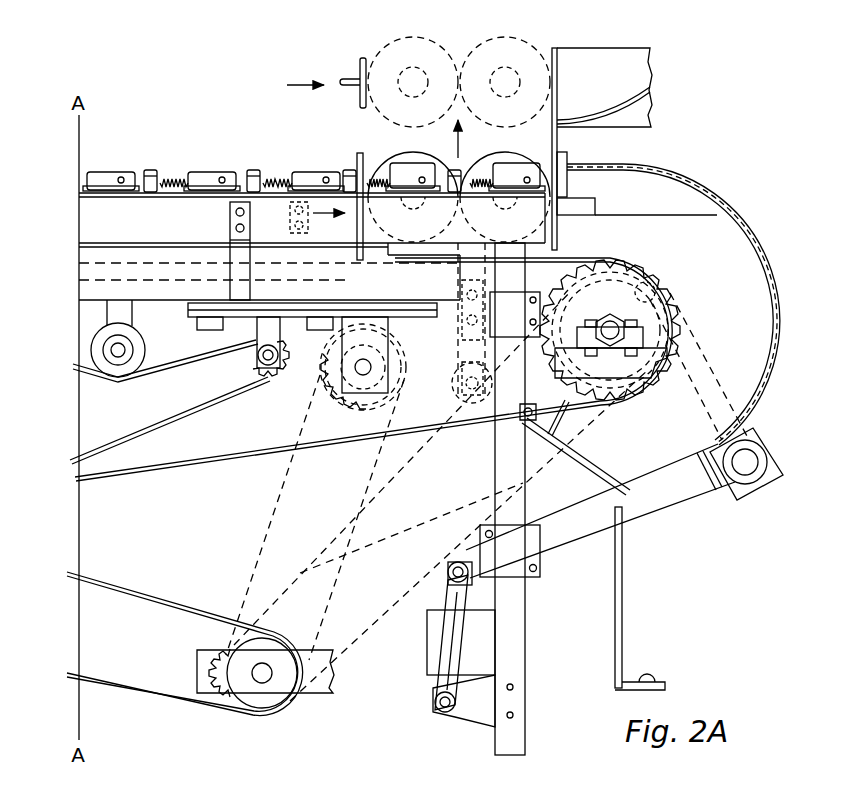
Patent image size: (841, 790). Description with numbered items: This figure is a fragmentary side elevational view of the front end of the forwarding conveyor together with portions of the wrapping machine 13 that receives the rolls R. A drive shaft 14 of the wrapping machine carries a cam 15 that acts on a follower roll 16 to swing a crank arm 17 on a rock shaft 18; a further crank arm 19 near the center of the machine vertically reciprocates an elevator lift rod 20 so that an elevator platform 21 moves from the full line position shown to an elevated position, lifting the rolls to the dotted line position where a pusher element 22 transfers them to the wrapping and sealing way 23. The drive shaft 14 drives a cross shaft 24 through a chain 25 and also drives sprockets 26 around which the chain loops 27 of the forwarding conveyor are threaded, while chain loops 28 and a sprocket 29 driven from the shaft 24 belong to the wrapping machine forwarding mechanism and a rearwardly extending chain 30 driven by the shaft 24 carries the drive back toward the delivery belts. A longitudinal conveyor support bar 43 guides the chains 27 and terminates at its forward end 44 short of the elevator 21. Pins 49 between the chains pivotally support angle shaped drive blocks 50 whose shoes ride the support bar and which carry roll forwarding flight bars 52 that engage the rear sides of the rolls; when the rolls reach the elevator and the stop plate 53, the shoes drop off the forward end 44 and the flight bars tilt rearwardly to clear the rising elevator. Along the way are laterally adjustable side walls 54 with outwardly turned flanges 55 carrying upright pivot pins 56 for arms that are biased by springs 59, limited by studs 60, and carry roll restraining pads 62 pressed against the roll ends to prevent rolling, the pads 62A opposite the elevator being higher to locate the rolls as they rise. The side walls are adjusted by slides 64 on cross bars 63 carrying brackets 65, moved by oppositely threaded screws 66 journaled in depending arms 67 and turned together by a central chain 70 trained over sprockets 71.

The wrapping machine 13 is at (656, 133).
The drive shaft 14 is at (642, 320).
The cam 15 is at (651, 268).
The follower roll 16 is at (660, 290).
The crank arm 17 is at (719, 385).
The rock shaft 18 is at (758, 461).
The further crank arm 19 is at (669, 505).
The elevator lift rod 20 is at (498, 468).
The elevator platform 21 is at (458, 248).
The pusher element 22 is at (360, 73).
The wrapping and sealing way 23 is at (642, 58).
The cross shaft 24 is at (265, 676).
The chain 25 is at (348, 648).
The sprockets 26 is at (622, 395).
The chain loops 27 is at (196, 468).
The chain loops 28 is at (268, 526).
The sprocket 29 is at (328, 396).
The rearwardly extending chain 30 is at (128, 587).
The conveyor support bar 43 is at (146, 288).
The forward end of support member 44 is at (269, 271).
The pins 49 is at (459, 197).
The drive blocks 50 is at (357, 233).
The roll forwarding flight bars 52 is at (358, 153).
The stop plate 53 is at (561, 219).
The side walls 54 is at (157, 205).
The outwardly turned flanges 55 is at (108, 243).
The upright pivot pins 56 is at (253, 170).
The springs 59 is at (261, 192).
The pins or studs 60 is at (128, 172).
The roll restraining pads 62 is at (218, 172).
The restraining pads 62A is at (495, 176).
The cross bars 63 is at (196, 328).
The slides 64 is at (233, 322).
The brackets 65 is at (232, 246).
The oppositely threaded screws 66 is at (258, 359).
The arms 67 is at (281, 353).
The central chain 70 is at (116, 445).
The sprockets 71 is at (273, 395).